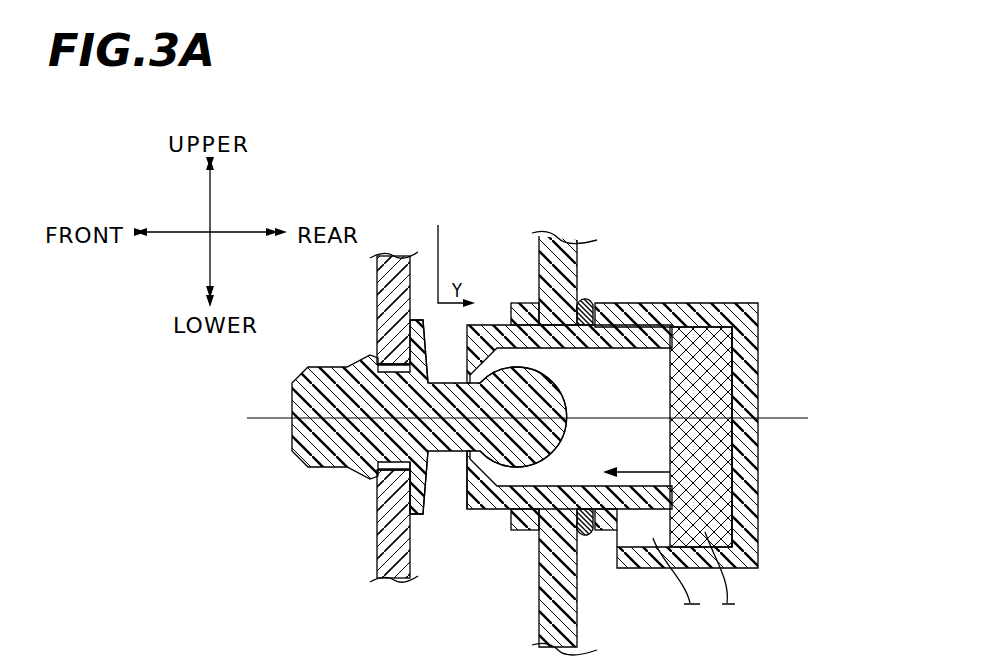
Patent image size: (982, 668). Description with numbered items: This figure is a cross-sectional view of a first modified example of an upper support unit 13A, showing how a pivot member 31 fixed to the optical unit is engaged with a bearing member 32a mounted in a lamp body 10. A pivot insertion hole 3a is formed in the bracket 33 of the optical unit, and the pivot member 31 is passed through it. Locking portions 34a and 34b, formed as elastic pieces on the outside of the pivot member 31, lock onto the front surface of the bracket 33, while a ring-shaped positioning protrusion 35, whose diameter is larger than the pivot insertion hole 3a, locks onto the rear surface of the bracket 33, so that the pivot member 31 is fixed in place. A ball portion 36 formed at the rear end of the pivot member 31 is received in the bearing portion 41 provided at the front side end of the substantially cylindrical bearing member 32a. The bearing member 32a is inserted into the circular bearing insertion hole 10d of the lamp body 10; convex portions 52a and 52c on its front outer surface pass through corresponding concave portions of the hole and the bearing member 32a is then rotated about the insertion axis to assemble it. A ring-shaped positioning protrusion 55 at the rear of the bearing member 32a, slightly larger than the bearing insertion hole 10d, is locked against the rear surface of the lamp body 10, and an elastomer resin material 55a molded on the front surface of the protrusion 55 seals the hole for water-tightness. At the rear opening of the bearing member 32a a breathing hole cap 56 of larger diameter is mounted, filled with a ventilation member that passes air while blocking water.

The upper support unit 13A is at (621, 227).
The lamp body 10 is at (567, 263).
The bearing insertion hole 10d is at (591, 345).
The pivot member 31 is at (320, 370).
The bearing member 32a is at (495, 324).
The bracket 33 is at (377, 523).
The pivot insertion hole 3a is at (378, 497).
The locking portion 34a is at (360, 476).
The locking portion 34b is at (367, 362).
The positioning protrusion 35 is at (422, 515).
The ball portion 36 is at (557, 393).
The bearing portion 41 is at (482, 477).
The convex portion 52a is at (527, 302).
The convex portion 52c is at (520, 532).
The positioning protrusion 55 is at (608, 535).
The elastomer resin material 55a is at (575, 510).
The breathing hole cap 56 is at (752, 503).